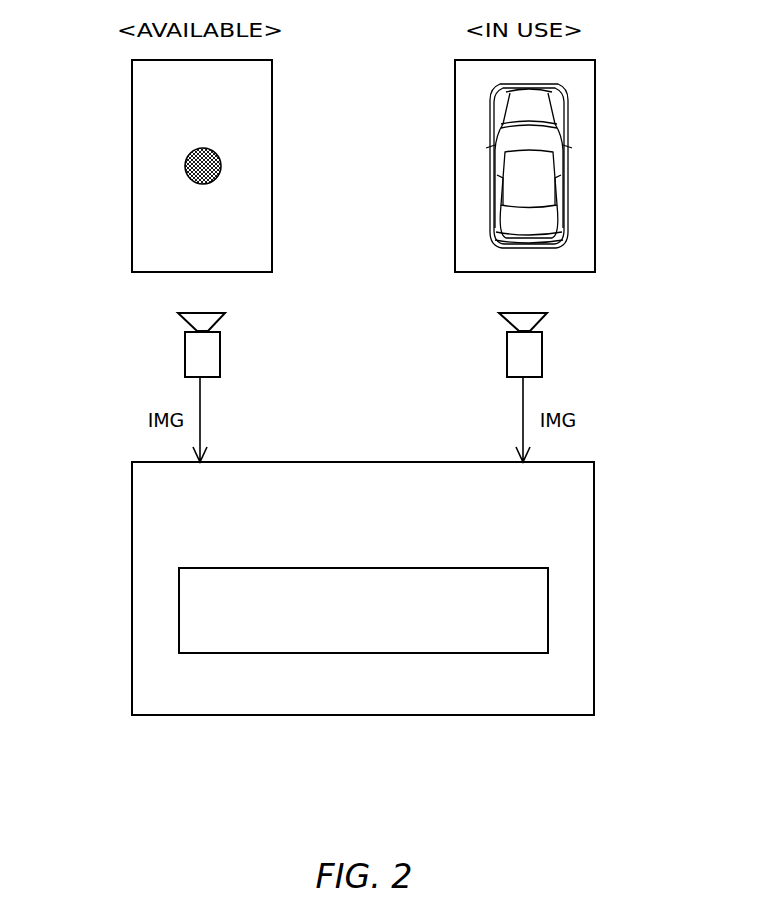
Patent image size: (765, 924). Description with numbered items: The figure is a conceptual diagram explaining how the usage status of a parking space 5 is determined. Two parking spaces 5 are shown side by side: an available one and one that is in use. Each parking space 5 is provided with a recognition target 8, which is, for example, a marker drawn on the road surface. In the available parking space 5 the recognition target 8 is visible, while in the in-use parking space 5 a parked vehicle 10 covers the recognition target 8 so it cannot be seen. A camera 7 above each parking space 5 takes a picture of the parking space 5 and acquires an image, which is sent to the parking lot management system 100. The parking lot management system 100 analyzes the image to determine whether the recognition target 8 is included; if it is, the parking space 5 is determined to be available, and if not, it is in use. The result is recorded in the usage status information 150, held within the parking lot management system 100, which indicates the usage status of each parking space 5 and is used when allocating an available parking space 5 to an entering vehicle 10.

The parking space 5 is at (132, 80).
The recognition target 8 is at (185, 166).
The vehicle 10 is at (567, 165).
The camera 7 is at (185, 352).
The parking lot management system 100 is at (367, 462).
The usage status information 150 is at (224, 568).